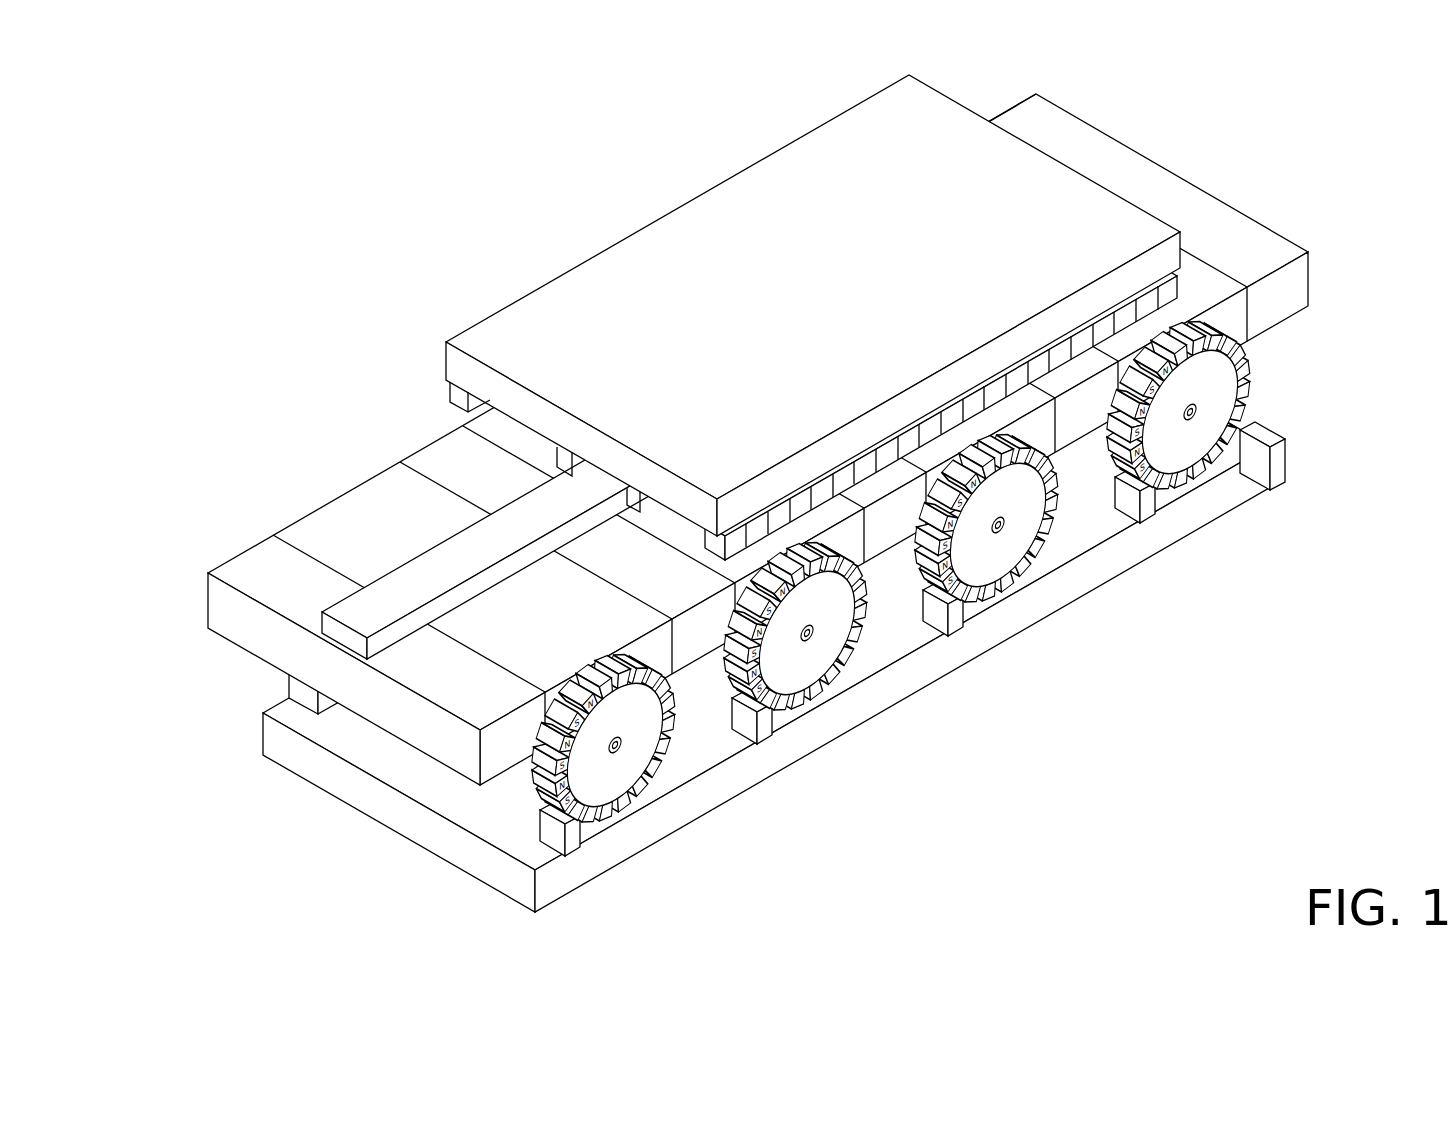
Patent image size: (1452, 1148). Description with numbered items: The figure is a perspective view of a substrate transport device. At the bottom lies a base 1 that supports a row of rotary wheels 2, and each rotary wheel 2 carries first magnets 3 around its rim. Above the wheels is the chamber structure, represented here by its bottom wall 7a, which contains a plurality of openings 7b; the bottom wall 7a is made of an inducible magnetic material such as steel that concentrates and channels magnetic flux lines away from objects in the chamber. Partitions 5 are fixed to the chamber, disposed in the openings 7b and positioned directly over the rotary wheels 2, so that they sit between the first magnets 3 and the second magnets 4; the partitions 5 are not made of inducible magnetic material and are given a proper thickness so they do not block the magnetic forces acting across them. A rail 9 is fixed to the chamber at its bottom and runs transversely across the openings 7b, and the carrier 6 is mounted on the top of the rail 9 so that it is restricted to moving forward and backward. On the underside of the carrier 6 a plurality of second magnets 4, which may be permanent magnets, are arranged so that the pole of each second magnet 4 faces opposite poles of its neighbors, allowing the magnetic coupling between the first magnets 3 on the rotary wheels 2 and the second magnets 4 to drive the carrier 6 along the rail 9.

The base 1 is at (277, 728).
The rotary wheels 2 is at (640, 748).
The first magnets 3 is at (537, 807).
The second magnets 4 is at (717, 543).
The partitions 5 is at (318, 530).
The carrier 6 is at (485, 375).
The bottom wall 7a is at (256, 571).
The openings 7b is at (673, 672).
The rail 9 is at (440, 568).